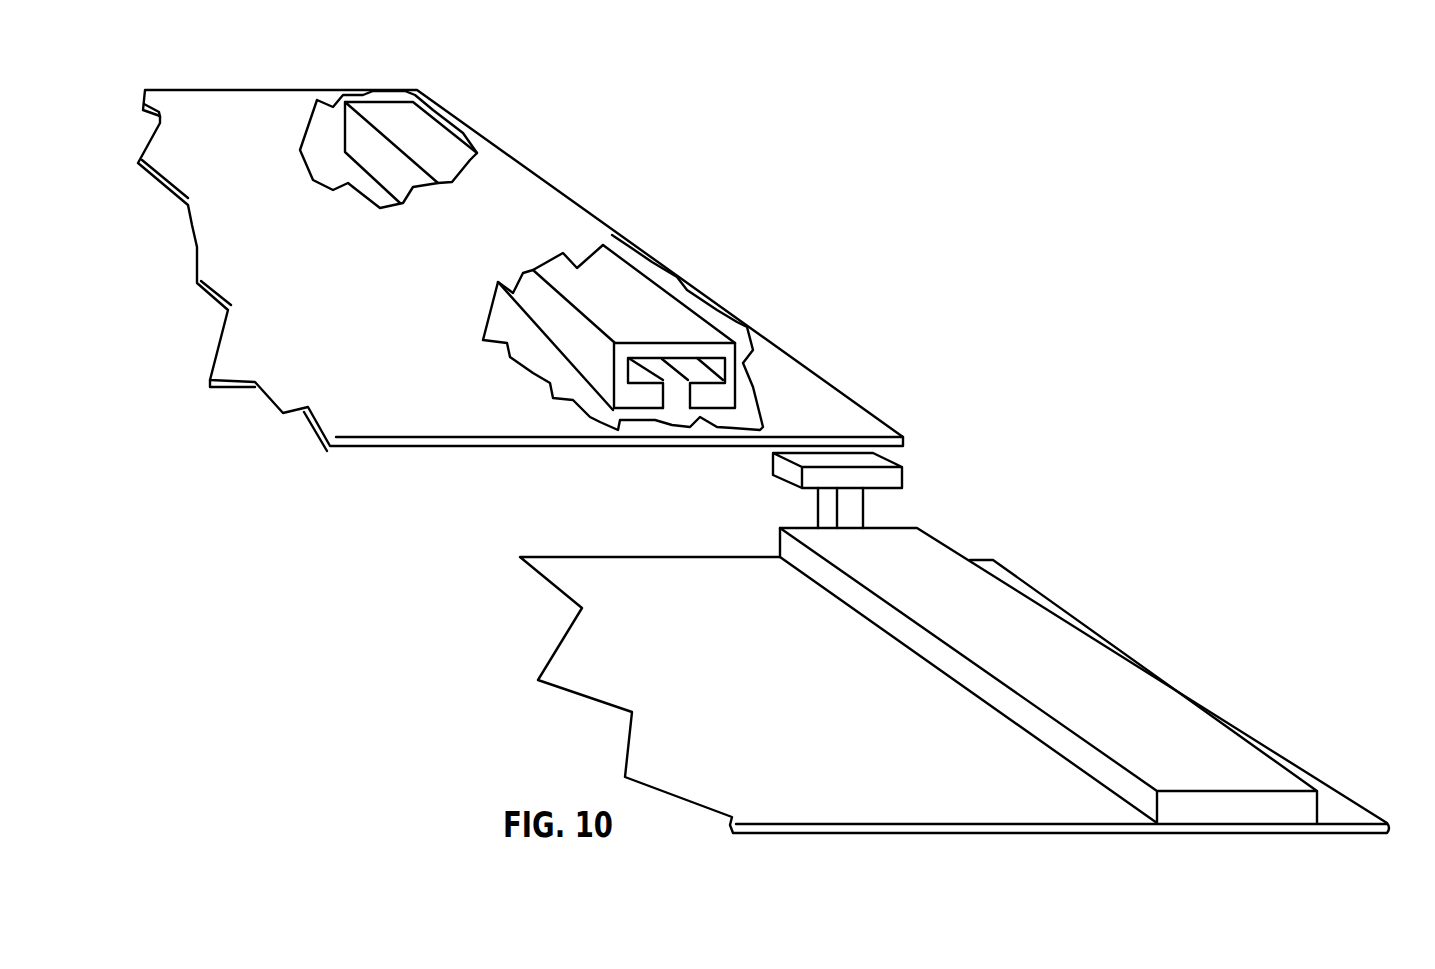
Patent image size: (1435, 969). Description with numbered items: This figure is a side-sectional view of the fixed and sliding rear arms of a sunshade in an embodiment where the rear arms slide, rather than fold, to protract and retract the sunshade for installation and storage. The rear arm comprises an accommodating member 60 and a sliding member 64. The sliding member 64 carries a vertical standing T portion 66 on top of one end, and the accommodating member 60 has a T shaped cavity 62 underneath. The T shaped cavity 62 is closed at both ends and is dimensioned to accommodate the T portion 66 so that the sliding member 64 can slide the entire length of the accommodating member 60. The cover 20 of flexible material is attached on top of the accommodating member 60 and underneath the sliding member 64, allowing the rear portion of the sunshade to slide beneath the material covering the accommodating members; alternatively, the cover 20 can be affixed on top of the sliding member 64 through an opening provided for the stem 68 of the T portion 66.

The cover 20 is at (363, 372).
The accommodating member 60 is at (722, 395).
The T shaped cavity 62 is at (678, 397).
The sliding member 64 is at (1192, 750).
The T portion 66 is at (892, 460).
The stem 68 is at (867, 505).